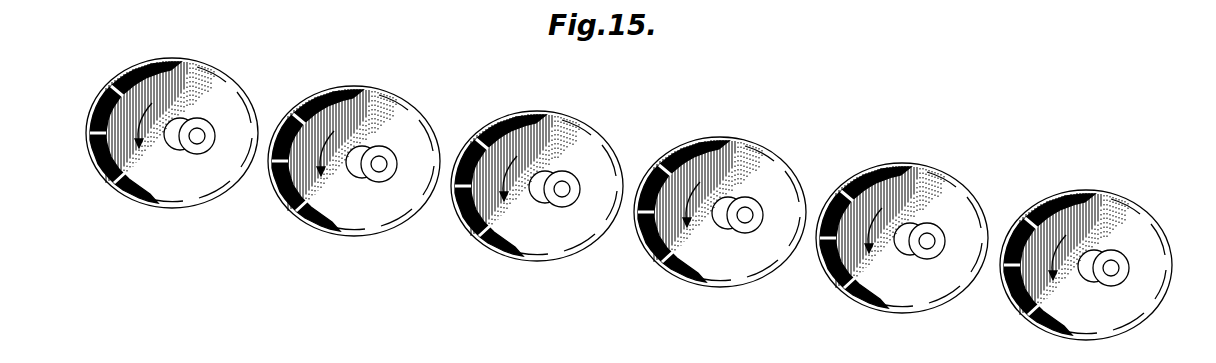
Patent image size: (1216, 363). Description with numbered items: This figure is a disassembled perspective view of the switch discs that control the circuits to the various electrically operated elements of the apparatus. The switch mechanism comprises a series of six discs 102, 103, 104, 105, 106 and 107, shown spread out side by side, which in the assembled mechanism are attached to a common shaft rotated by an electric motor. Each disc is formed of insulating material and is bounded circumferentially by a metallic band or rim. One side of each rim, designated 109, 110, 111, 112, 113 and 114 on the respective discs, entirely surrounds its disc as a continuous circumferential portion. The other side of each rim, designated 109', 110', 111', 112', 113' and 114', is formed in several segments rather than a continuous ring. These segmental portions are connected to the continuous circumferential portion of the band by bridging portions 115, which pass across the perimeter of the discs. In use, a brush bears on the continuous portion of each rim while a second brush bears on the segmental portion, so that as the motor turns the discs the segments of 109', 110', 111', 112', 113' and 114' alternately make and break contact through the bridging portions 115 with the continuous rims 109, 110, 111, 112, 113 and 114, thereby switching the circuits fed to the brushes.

The disc 102 is at (195, 80).
The disc 103 is at (397, 112).
The disc 104 is at (577, 143).
The disc 105 is at (757, 170).
The disc 106 is at (925, 187).
The disc 107 is at (1117, 218).
The continuous rim side 109 is at (124, 125).
The segmental rim side 109' is at (165, 108).
The continuous rim side 110 is at (317, 138).
The segmental rim side 110' is at (347, 132).
The continuous rim side 111 is at (500, 163).
The segmental rim side 111' is at (527, 155).
The continuous rim side 112 is at (683, 200).
The segmental rim side 112' is at (716, 185).
The continuous rim side 113 is at (865, 221).
The segmental rim side 113' is at (897, 203).
The continuous rim side 114 is at (1049, 236).
The segmental rim side 114' is at (1084, 232).
The bridging portions 115 is at (145, 70).